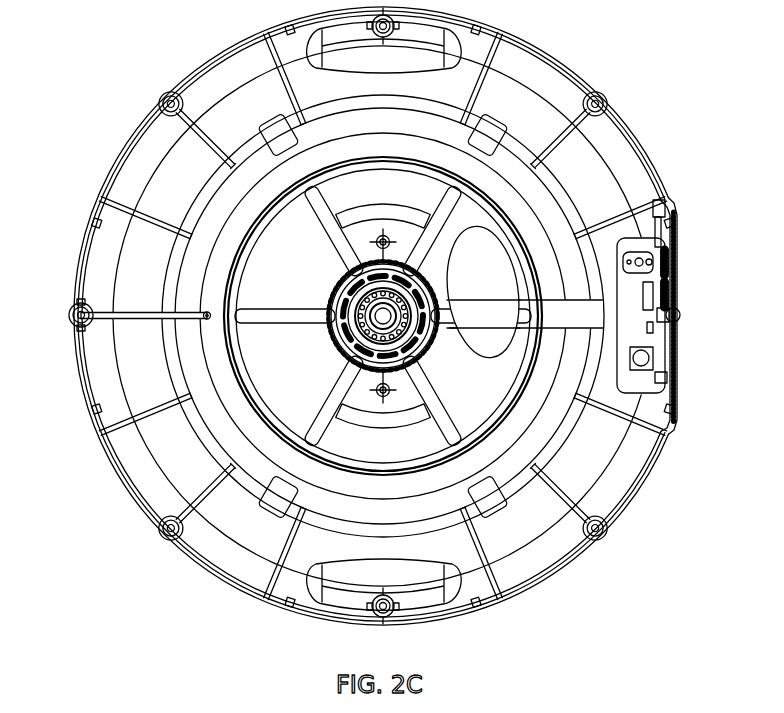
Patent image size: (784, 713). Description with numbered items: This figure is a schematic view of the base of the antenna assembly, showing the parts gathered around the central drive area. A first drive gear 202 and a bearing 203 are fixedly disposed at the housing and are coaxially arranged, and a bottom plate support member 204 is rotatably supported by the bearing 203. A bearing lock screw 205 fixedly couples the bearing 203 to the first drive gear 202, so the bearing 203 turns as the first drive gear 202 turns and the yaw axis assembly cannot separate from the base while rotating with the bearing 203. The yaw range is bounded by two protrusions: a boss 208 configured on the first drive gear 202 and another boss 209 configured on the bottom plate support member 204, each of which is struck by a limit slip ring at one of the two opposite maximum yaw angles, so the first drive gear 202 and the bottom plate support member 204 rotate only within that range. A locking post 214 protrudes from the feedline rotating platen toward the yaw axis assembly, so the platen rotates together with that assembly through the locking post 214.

The first drive gear 202 is at (380, 260).
The bearing 203 is at (358, 302).
The bottom plate support member 204 is at (342, 330).
The bearing lock screw 205 is at (607, 517).
The boss 208 is at (390, 278).
The boss 209 is at (418, 296).
The locking post 214 is at (395, 250).